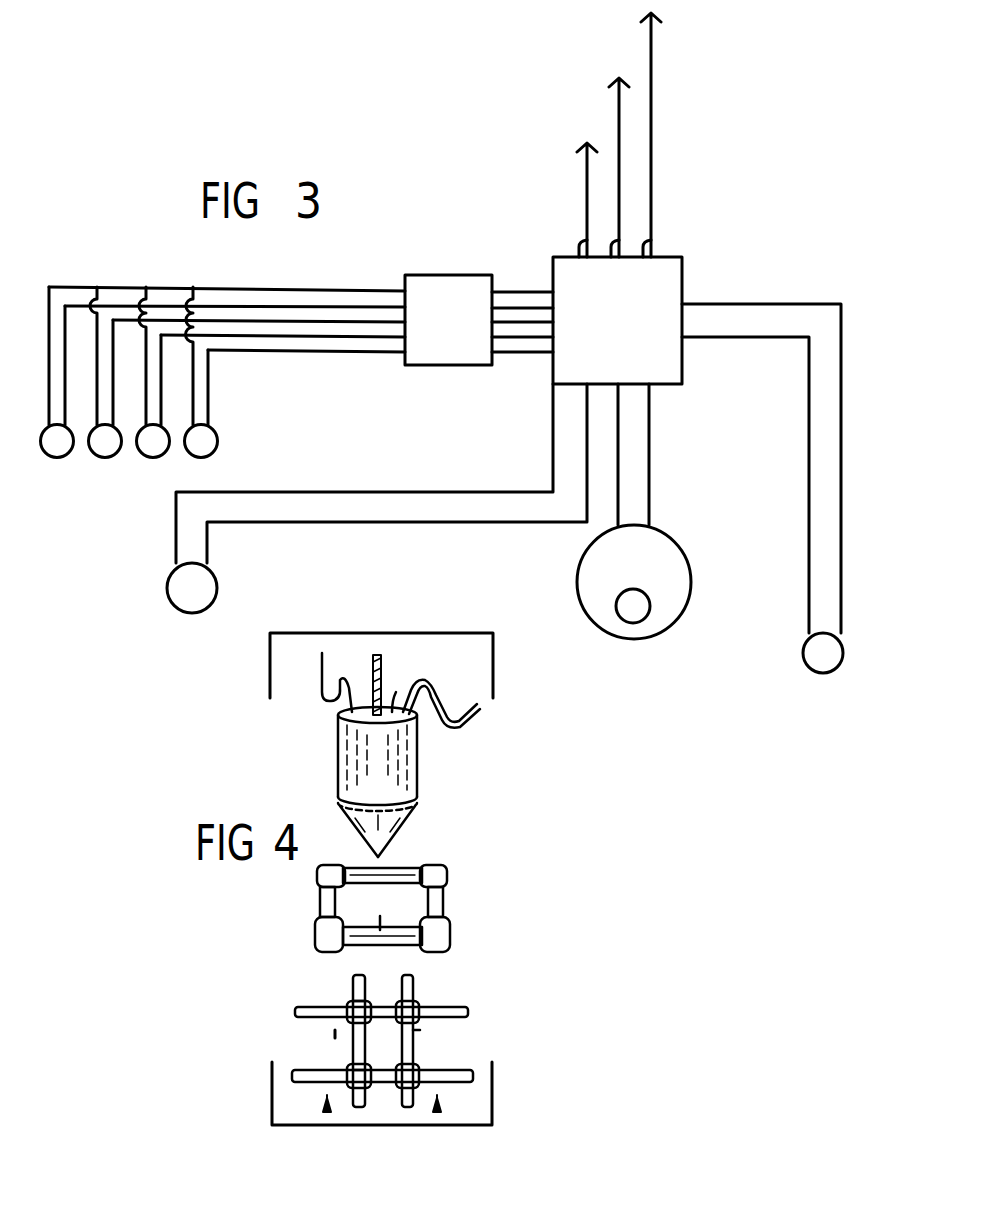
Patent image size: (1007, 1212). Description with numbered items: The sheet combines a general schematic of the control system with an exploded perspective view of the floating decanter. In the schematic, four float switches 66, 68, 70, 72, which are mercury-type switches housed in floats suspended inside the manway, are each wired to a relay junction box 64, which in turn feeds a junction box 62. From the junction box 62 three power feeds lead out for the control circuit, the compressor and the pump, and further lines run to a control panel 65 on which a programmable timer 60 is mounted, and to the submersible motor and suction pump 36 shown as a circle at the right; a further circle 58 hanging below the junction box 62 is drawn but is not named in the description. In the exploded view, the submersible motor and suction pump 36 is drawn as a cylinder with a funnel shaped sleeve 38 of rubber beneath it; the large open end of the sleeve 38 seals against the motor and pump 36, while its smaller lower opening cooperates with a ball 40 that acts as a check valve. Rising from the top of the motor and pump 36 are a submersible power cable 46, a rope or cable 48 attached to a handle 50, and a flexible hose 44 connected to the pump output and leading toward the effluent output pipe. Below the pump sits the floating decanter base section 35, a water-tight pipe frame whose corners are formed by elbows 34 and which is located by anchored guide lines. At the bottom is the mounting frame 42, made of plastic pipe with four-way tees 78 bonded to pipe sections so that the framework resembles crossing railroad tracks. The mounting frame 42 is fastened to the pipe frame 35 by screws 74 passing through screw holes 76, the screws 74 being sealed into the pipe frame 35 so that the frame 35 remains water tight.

In FIG. 4, the elbows 34 is at (441, 882).
In FIG. 4, the floating decanter base section 35 is at (380, 928).
In FIG. 3, the submersible motor and suction pump 36 is at (835, 652).
In FIG. 4, the submersible motor and suction pump 36 is at (377, 759).
In FIG. 4, the funnel shaped sleeve 38 is at (377, 831).
In FIG. 4, the ball 40 is at (395, 846).
In FIG. 4, the mounting frame 42 is at (457, 1007).
In FIG. 4, the flexible hose 44 is at (455, 732).
In FIG. 4, the submersible power cable 46 is at (325, 688).
In FIG. 4, the rope or cable 48 is at (370, 700).
In FIG. 4, the handle 50 is at (395, 700).
In FIG. 3, the pump 58 is at (189, 606).
In FIG. 3, the programmable timer 60 is at (625, 612).
In FIG. 3, the junction box 62 is at (513, 192).
In FIG. 3, the relay junction box 64 is at (448, 320).
In FIG. 3, the control panel 65 is at (680, 577).
In FIG. 3, the switch 66 is at (54, 456).
In FIG. 3, the switch 68 is at (104, 456).
In FIG. 3, the switch 70 is at (153, 456).
In FIG. 3, the switch 72 is at (201, 456).
In FIG. 4, the screws 74 is at (436, 1031).
In FIG. 4, the screw holes 76 is at (348, 1010).
In FIG. 4, the 4-way tees 78 is at (353, 1067).